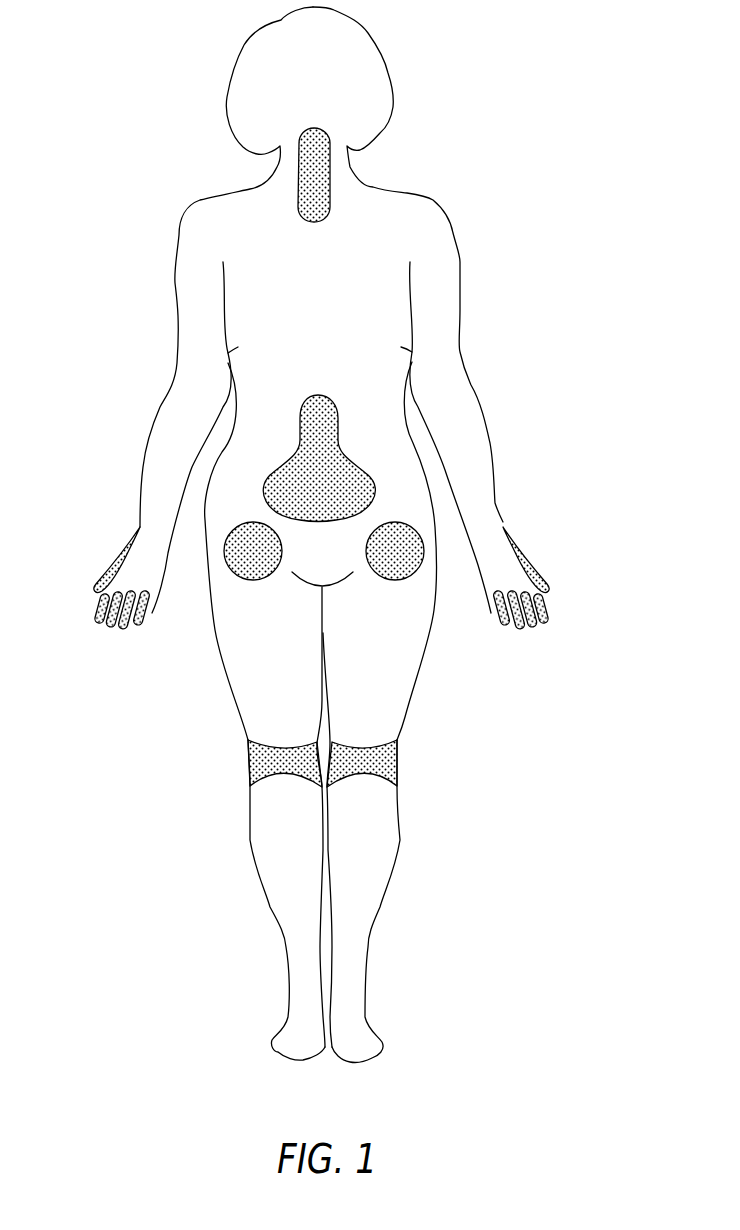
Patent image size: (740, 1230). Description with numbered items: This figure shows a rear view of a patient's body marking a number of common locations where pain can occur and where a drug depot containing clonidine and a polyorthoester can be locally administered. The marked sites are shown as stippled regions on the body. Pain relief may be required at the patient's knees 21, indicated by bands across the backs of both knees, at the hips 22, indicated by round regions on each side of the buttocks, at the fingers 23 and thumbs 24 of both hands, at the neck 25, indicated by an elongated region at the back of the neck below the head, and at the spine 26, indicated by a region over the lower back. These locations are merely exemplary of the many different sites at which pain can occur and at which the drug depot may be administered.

The knees 21 is at (255, 760).
The hips 22 is at (243, 547).
The fingers 23 is at (113, 632).
The thumbs 24 is at (107, 562).
The neck 25 is at (315, 168).
The spine 26 is at (353, 468).